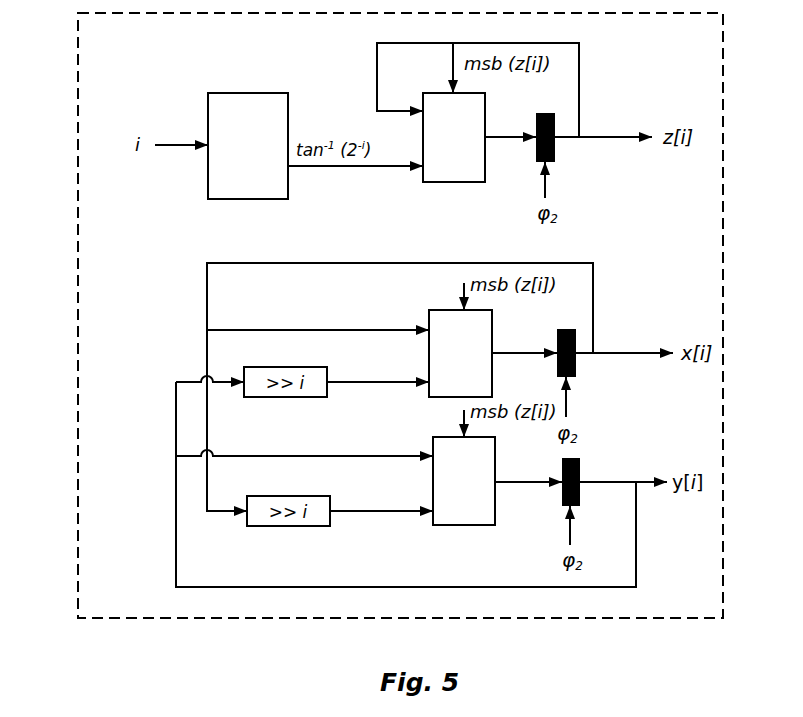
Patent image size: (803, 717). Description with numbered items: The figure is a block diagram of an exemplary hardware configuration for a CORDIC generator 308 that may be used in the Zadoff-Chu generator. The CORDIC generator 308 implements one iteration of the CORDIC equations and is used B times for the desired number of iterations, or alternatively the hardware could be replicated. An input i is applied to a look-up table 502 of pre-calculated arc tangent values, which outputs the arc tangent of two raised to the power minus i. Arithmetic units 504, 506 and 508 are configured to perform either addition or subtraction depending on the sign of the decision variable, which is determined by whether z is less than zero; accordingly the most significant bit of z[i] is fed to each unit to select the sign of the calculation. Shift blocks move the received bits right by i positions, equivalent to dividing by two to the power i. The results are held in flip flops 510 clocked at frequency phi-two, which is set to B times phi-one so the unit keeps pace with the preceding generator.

The CORDIC generator 308 is at (74, 171).
The arc tangent look-up table 502 is at (270, 93).
The arithmetic unit 504 is at (455, 182).
The arithmetic unit 506 is at (430, 397).
The arithmetic unit 508 is at (437, 525).
The flip flops 510 is at (552, 113).